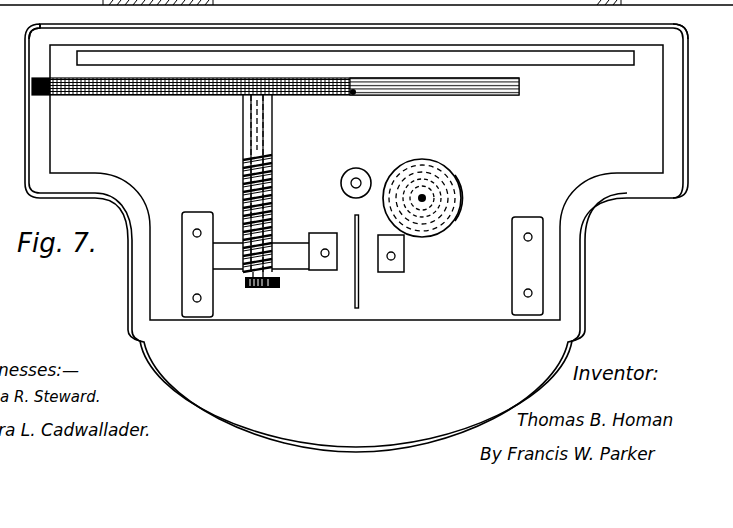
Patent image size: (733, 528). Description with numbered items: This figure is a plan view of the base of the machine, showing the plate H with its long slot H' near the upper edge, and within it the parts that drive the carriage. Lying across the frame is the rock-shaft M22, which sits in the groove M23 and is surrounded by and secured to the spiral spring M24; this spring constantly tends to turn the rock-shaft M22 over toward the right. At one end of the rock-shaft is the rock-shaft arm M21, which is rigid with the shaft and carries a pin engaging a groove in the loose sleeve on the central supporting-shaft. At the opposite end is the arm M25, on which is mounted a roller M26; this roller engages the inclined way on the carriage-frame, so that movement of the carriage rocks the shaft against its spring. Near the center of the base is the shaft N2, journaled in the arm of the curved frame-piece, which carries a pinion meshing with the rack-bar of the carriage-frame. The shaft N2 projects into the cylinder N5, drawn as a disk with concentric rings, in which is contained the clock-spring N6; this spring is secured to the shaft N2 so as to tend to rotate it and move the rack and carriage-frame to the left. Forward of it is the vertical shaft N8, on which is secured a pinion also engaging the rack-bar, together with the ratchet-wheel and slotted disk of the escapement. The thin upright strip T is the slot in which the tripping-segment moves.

The casing plate H is at (356, 238).
The slot in casing H' is at (355, 85).
The rock-shaft arm M21 is at (278, 290).
The rock-shaft M22 is at (257, 142).
The groove M23 is at (245, 137).
The spiral spring M24 is at (270, 191).
The arm M25 is at (305, 97).
The roller M26 is at (353, 92).
The shaft N2 is at (424, 198).
The cylinder N5 is at (435, 167).
The clock-spring N6 is at (452, 188).
The vertical shaft N8 is at (356, 182).
The slot T is at (358, 288).